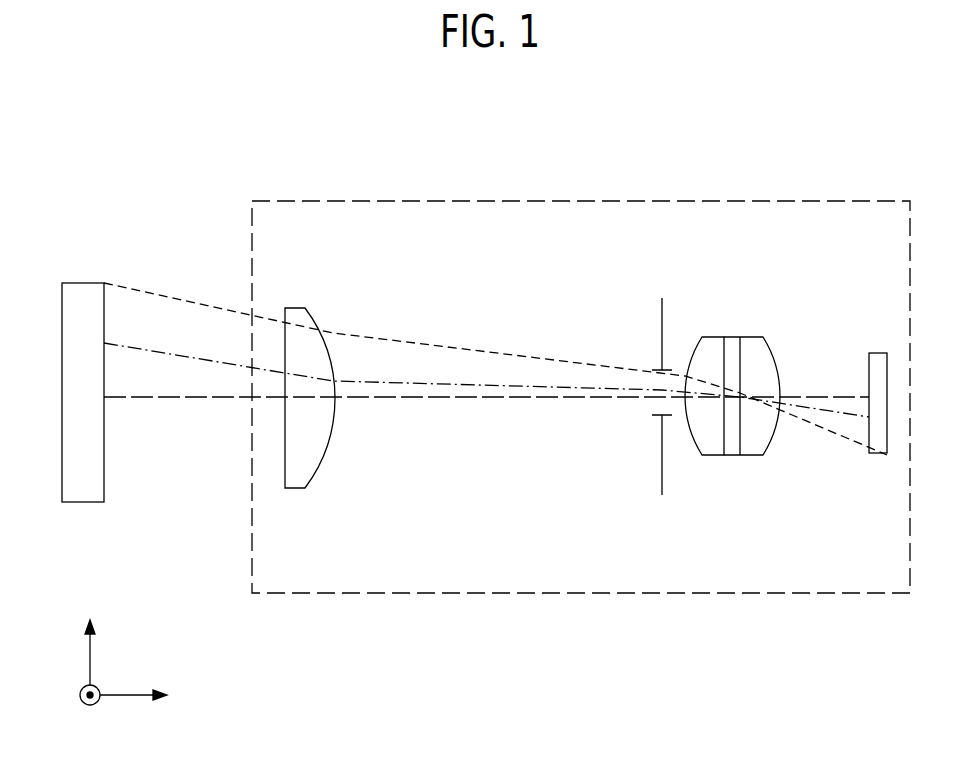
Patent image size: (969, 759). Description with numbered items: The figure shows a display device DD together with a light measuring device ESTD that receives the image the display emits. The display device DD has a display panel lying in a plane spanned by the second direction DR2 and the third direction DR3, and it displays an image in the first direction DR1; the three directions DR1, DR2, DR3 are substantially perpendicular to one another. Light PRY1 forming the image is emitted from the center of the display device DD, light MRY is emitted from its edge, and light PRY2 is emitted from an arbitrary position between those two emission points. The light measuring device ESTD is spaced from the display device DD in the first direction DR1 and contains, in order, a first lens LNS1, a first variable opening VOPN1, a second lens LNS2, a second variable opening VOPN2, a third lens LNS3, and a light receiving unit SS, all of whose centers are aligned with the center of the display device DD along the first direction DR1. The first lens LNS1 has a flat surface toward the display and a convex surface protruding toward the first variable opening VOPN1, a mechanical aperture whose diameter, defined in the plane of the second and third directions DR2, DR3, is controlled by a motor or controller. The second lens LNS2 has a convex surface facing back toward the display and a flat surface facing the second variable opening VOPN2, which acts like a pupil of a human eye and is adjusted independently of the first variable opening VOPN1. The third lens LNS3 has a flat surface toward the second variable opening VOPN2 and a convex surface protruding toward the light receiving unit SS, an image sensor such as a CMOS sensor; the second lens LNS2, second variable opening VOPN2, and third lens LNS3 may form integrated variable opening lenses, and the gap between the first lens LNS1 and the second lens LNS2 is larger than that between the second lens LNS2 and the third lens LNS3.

The light measuring device ESTD is at (583, 201).
The display device DD is at (85, 283).
The first lens LNS1 is at (294, 308).
The second lens LNS2 is at (705, 337).
The third lens LNS3 is at (753, 337).
The light PRY1 is at (125, 398).
The light PRY2 is at (178, 358).
The light MRY is at (218, 310).
The first variable opening VOPN1 is at (646, 406).
The second variable opening VOPN2 is at (733, 455).
The light receiving unit SS is at (880, 455).
The first direction DR1 is at (151, 697).
The second direction DR2 is at (90, 637).
The third direction DR3 is at (90, 712).